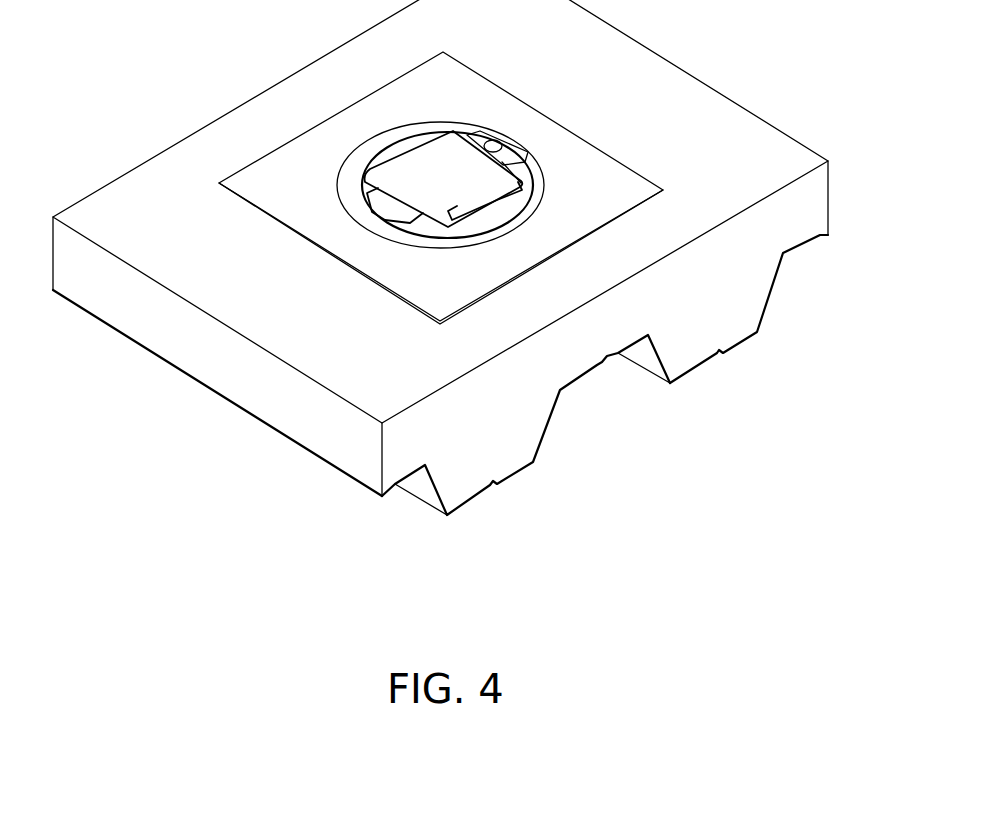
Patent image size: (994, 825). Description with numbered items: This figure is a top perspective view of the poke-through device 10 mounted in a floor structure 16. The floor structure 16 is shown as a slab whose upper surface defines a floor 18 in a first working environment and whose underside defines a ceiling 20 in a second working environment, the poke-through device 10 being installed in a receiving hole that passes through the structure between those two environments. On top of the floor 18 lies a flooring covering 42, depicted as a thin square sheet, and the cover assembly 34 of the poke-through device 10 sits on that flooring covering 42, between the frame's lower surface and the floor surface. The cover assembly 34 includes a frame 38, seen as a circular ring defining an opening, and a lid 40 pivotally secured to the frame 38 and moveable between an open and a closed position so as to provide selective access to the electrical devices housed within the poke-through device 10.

The poke-through device 10 is at (432, 108).
The floor structure 16 is at (733, 315).
The floor 18 is at (243, 153).
The ceiling 20 is at (518, 479).
The cover assembly 34 is at (356, 236).
The frame 38 is at (352, 163).
The lid 40 is at (447, 185).
The flooring covering 42 is at (378, 287).